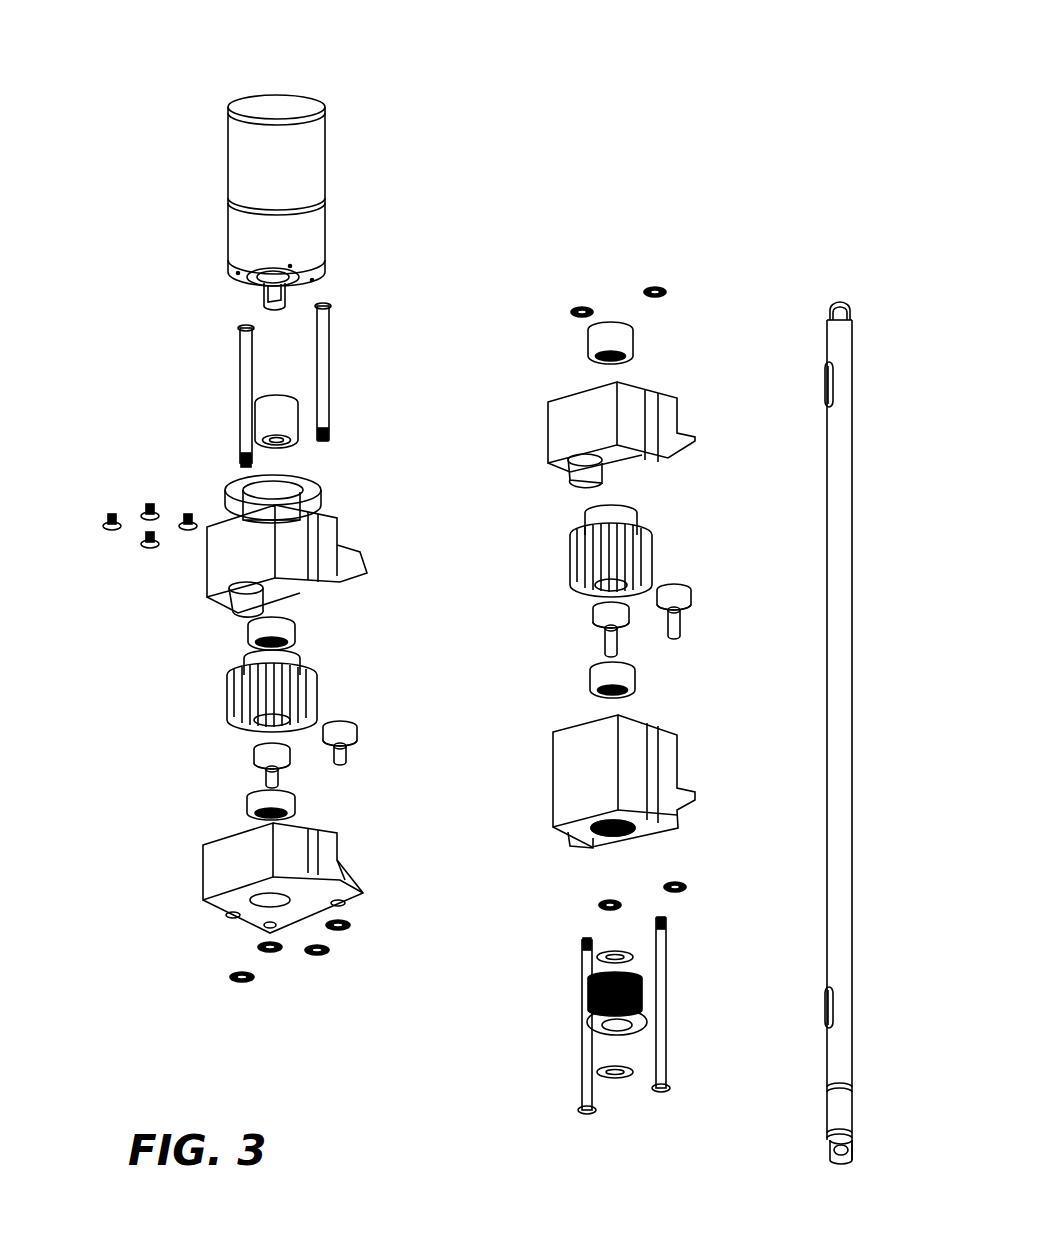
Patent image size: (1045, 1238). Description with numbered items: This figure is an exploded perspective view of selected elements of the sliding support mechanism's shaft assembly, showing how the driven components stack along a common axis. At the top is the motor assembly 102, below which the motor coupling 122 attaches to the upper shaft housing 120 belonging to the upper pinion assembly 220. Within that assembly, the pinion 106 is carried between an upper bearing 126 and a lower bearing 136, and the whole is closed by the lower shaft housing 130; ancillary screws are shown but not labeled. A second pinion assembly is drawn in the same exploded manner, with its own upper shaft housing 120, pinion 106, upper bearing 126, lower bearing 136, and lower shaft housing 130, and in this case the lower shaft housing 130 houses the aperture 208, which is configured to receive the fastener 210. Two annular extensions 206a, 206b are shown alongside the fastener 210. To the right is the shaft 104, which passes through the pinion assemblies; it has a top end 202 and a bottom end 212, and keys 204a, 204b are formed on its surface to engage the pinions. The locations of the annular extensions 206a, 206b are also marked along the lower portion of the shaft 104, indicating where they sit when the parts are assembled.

The upper pinion assembly 220 is at (142, 96).
The motor assembly 102 is at (208, 228).
The shaft 104 is at (797, 243).
The motor coupling 122 is at (262, 500).
The upper shaft housing 120 is at (257, 572).
The upper bearing 126 is at (300, 633).
The pinion 106 is at (230, 703).
The lower bearing 136 is at (298, 806).
The lower shaft housing 130 is at (257, 878).
The aperture 208 is at (611, 855).
The annular extension 206a is at (600, 958).
The fastener 210 is at (600, 1021).
The annular extension 206b is at (600, 1072).
The top end 202 is at (838, 318).
The key 204a is at (828, 384).
The key 204b is at (828, 998).
The bottom end 212 is at (836, 1162).